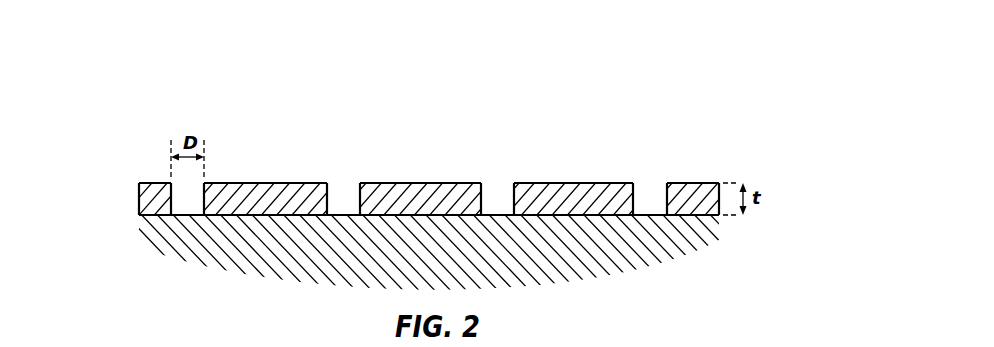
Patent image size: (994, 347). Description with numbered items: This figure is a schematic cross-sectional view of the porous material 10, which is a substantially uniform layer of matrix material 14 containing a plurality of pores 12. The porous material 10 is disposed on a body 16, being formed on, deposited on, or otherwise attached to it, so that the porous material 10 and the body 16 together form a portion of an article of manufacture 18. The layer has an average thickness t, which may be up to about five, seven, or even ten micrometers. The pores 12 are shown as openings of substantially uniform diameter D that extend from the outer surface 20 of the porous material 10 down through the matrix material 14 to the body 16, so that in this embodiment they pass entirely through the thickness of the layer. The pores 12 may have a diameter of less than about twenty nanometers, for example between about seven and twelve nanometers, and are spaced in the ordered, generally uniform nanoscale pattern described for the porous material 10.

The porous material 10 is at (427, 201).
The pores 12 is at (497, 190).
The matrix material 14 is at (421, 167).
The body 16 is at (586, 257).
The article of manufacture 18 is at (797, 145).
The outer surface 20 is at (258, 183).